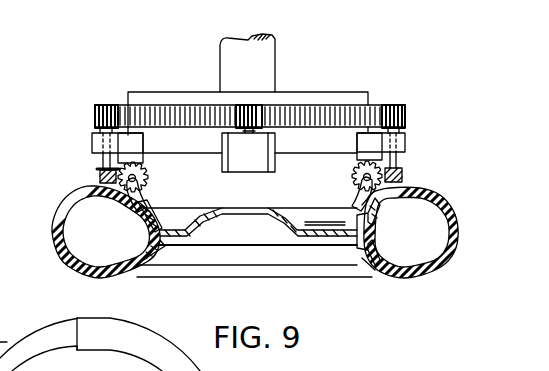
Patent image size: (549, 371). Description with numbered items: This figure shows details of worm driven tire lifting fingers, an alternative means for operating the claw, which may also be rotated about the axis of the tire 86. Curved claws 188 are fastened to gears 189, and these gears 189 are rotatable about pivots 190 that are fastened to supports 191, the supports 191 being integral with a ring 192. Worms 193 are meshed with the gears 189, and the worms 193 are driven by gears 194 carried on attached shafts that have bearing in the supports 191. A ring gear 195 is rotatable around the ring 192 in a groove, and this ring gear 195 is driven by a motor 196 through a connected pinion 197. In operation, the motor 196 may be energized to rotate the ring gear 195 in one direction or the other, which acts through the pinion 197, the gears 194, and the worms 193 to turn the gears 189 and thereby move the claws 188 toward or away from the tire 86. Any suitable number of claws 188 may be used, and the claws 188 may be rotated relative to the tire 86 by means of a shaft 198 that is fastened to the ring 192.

The tire 86 is at (274, 240).
The curved claws 188 is at (143, 199).
The gears 189 is at (149, 173).
The pivots 190 is at (100, 173).
The supports 191 is at (143, 143).
The ring 192 is at (305, 106).
The worms 193 is at (99, 183).
The gears 194 is at (95, 110).
The ring gear 195 is at (165, 107).
The motor 196 is at (252, 170).
The pinion 197 is at (245, 105).
The shaft 198 is at (276, 41).